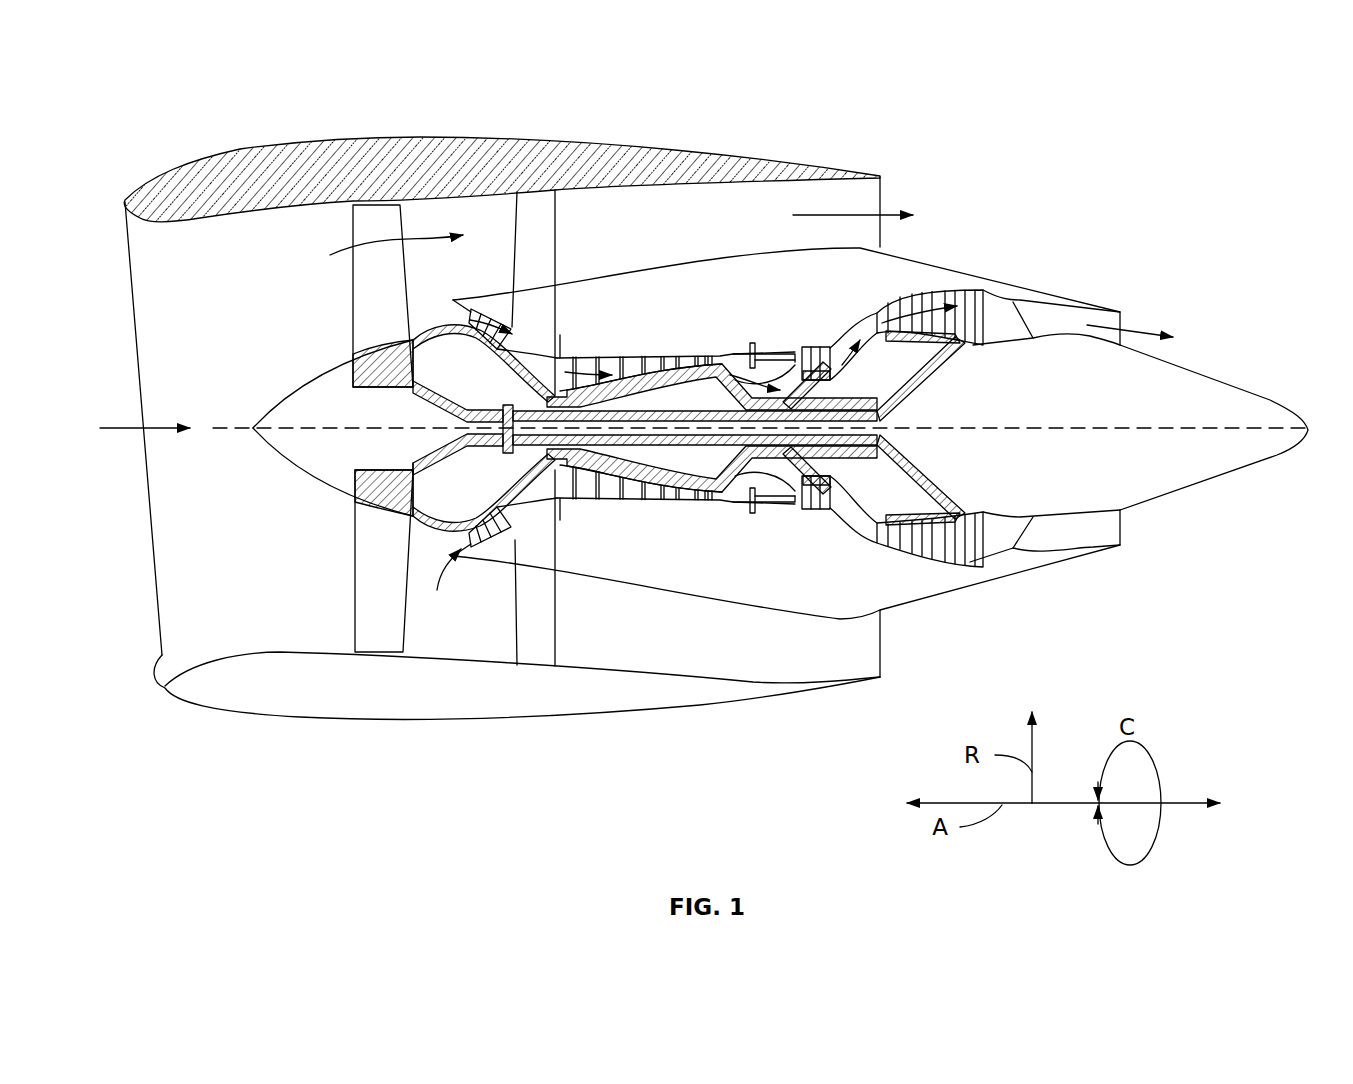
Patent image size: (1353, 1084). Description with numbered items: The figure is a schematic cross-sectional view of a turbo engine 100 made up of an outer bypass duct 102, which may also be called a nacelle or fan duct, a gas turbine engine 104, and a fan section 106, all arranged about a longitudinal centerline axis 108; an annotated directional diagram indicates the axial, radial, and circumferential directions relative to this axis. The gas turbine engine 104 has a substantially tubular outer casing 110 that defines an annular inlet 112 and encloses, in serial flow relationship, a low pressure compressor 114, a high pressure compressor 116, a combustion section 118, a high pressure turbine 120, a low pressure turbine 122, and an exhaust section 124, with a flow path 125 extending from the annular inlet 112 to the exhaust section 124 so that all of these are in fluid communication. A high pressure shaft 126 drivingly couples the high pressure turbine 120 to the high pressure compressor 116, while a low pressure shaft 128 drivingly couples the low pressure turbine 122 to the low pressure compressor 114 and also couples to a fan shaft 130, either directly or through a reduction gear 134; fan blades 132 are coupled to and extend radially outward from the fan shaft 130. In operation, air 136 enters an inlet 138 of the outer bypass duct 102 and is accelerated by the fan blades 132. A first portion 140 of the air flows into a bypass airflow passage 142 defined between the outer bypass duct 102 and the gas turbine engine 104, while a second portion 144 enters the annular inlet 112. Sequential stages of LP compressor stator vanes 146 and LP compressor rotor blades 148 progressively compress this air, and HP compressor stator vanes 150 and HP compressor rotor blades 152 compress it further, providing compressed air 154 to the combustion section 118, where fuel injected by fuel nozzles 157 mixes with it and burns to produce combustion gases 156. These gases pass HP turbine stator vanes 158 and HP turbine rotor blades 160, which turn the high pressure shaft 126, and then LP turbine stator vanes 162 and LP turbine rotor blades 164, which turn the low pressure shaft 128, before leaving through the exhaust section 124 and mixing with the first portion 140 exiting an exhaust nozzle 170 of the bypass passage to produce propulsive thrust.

The turbo engine 100 is at (1103, 133).
The outer bypass duct 102 is at (410, 139).
The gas turbine engine 104 is at (937, 243).
The fan section 106 is at (268, 281).
The centerline axis 108 is at (1040, 427).
The outer casing 110 is at (717, 600).
The annular inlet 112 is at (439, 583).
The low pressure compressor 114 is at (507, 527).
The high pressure compressor 116 is at (596, 500).
The combustion section 118 is at (766, 506).
The high pressure turbine 120 is at (841, 496).
The low pressure turbine 122 is at (972, 569).
The exhaust section 124 is at (1126, 317).
The flow path 125 is at (860, 528).
The high pressure shaft 126 is at (787, 398).
The low pressure shaft 128 is at (518, 405).
The fan shaft 130 is at (413, 392).
The fan blades 132 is at (355, 575).
The reduction gear 134 is at (500, 490).
The air 136 is at (373, 243).
The inlet 138 is at (158, 652).
The first portion of the air 140 is at (830, 213).
The bypass airflow passage 142 is at (712, 226).
The second portion of the air 144 is at (437, 315).
The LP compressor stator vanes 146 is at (483, 555).
The LP compressor rotor blades 148 is at (492, 552).
The HP compressor stator vanes 150 is at (690, 499).
The HP compressor rotor blades 152 is at (700, 499).
The compressed air 154 is at (750, 372).
The combustion gases 156 is at (818, 355).
The fuel nozzles 157 is at (752, 343).
The HP turbine stator vanes 158 is at (812, 509).
The HP turbine rotor blades 160 is at (813, 493).
The LP turbine stator vanes 162 is at (893, 291).
The LP turbine rotor blades 164 is at (930, 289).
The exhaust nozzle 170 is at (873, 173).